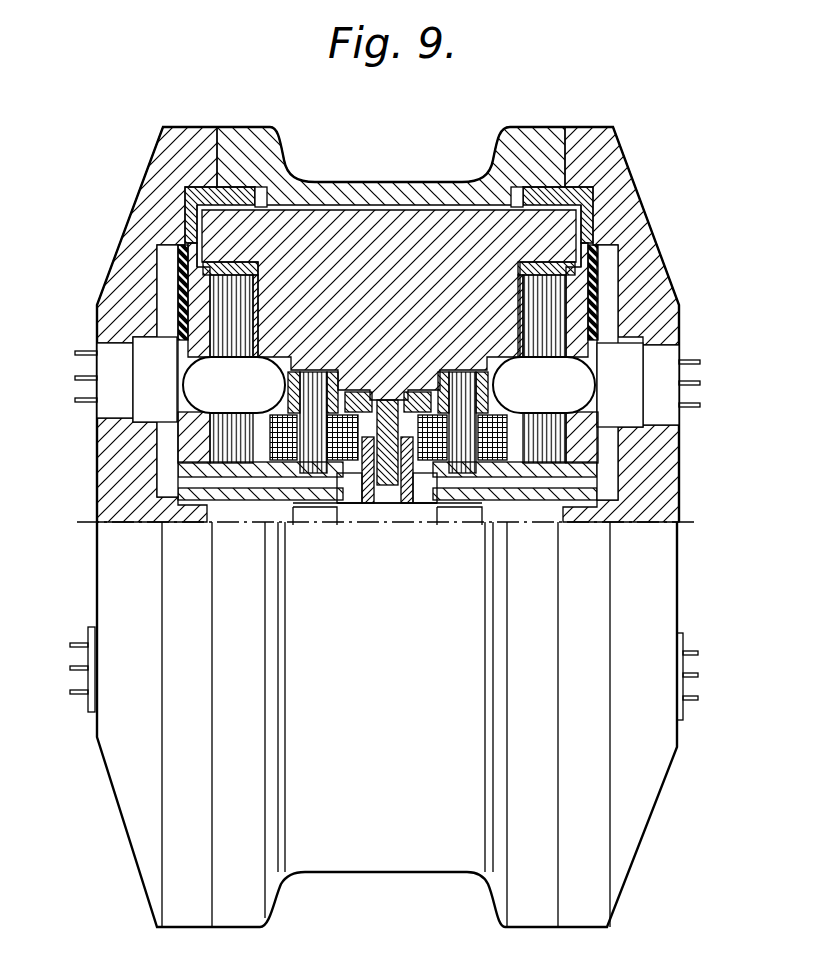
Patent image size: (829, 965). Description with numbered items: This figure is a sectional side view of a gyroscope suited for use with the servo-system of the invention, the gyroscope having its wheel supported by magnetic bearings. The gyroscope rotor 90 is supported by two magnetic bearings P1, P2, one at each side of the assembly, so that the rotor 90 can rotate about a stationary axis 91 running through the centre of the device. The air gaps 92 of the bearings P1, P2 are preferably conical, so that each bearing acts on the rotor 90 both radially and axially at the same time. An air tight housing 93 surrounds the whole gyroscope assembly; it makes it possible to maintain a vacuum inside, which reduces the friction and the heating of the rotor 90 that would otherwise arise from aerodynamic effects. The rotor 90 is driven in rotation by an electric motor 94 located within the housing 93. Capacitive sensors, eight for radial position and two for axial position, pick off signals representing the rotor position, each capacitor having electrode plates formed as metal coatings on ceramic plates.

The gyroscope rotor 90 is at (383, 257).
The stationary axis 91 is at (383, 513).
The air gaps 92 is at (190, 329).
The air tight housing 93 is at (118, 489).
The electric motor 94 is at (313, 468).
The magnetic bearing P1 is at (252, 348).
The magnetic bearing P2 is at (525, 350).